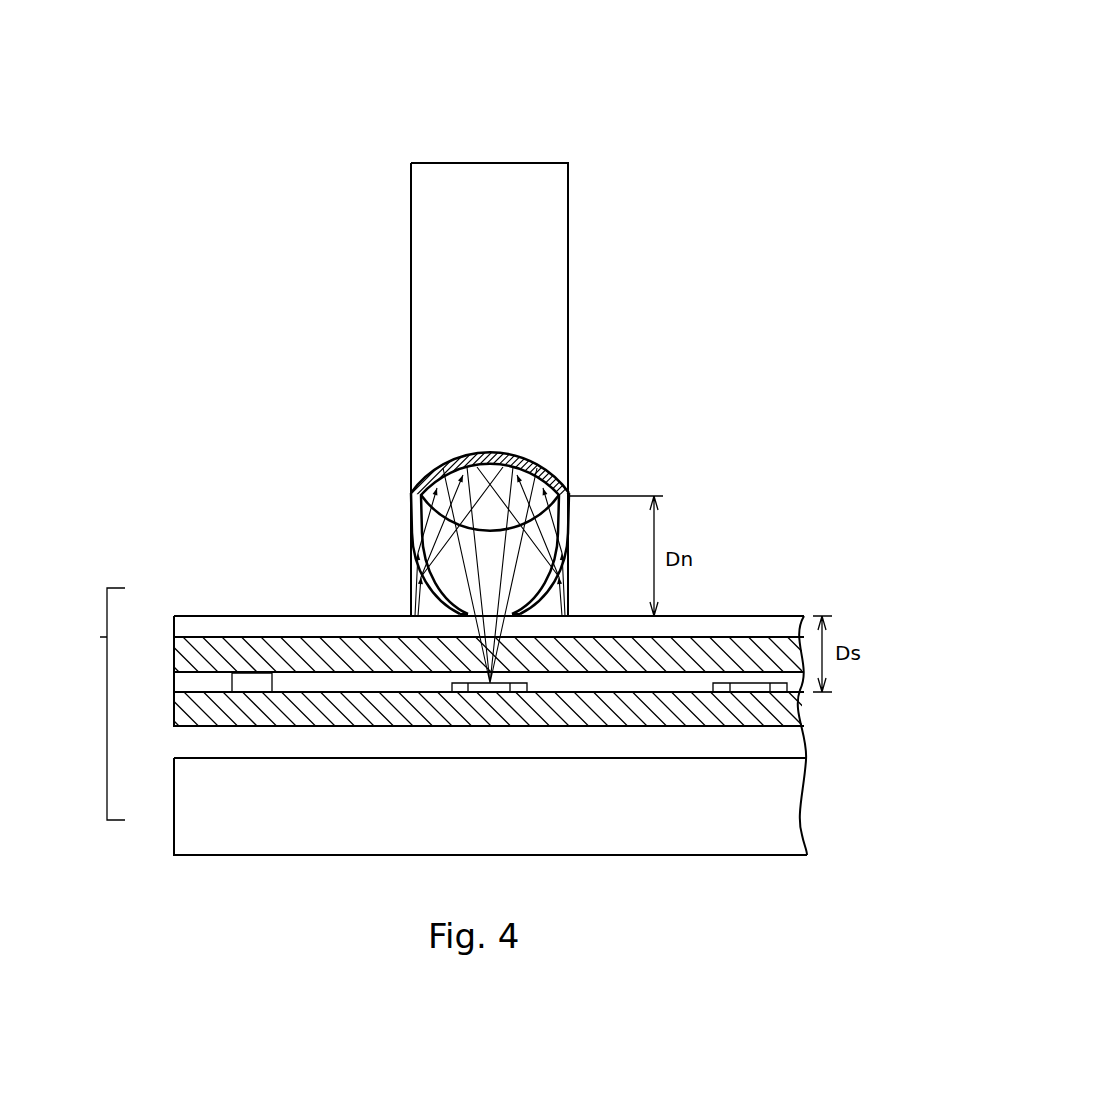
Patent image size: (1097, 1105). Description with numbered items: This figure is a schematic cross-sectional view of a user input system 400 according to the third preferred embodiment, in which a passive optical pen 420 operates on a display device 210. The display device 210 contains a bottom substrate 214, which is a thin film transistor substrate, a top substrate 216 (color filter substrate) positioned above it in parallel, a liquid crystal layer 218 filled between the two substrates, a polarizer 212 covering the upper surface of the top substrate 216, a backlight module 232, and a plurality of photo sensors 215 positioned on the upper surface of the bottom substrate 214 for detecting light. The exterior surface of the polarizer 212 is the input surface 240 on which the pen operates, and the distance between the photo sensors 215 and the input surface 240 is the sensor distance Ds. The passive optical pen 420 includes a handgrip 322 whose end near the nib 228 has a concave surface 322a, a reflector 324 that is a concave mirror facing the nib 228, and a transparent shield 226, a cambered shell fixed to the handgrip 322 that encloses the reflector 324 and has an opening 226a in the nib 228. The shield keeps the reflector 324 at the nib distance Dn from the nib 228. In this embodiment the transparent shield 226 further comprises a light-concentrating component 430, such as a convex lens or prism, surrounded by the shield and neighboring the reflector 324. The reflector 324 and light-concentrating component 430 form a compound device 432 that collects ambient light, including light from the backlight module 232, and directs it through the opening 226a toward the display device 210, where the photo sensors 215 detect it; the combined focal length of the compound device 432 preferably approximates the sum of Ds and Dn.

The user input system 400 is at (615, 72).
The passive optical pen 420 is at (418, 143).
The handgrip 322 is at (504, 340).
The surface of the handgrip 322a is at (447, 472).
The light-concentrating component 430 is at (505, 458).
The reflector 324 is at (545, 480).
The compound device 432 is at (630, 413).
The transparent shield 226 is at (417, 507).
The opening 226a is at (456, 589).
The nib 228 is at (536, 611).
The input surface 240 is at (231, 615).
The display device 210 is at (100, 638).
The polarizer 212 is at (186, 628).
The top substrate 216 is at (186, 658).
The liquid crystal layer 218 is at (297, 683).
The bottom substrate 214 is at (186, 713).
The backlight module 232 is at (186, 805).
The photo sensors 215 is at (486, 692).